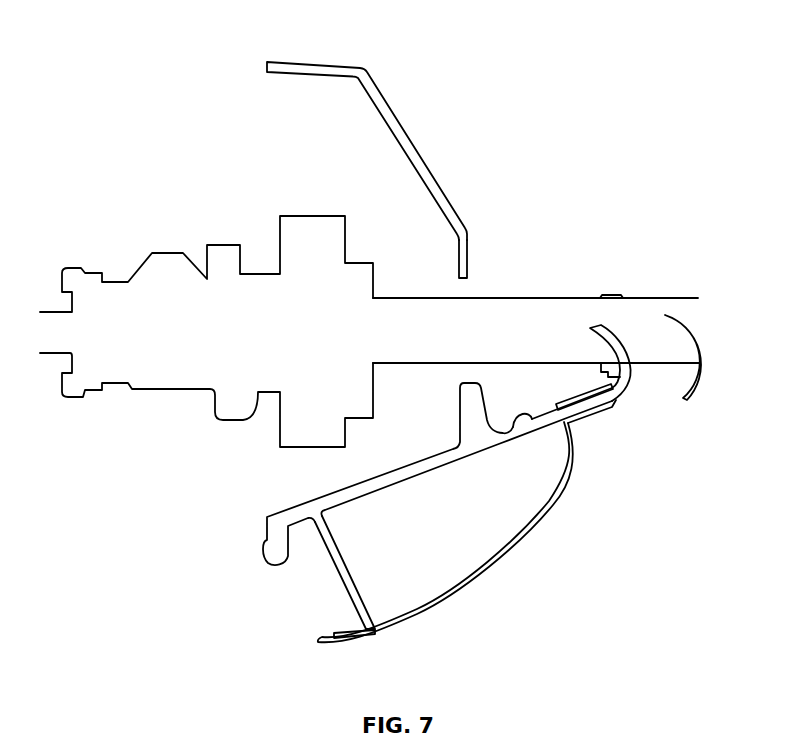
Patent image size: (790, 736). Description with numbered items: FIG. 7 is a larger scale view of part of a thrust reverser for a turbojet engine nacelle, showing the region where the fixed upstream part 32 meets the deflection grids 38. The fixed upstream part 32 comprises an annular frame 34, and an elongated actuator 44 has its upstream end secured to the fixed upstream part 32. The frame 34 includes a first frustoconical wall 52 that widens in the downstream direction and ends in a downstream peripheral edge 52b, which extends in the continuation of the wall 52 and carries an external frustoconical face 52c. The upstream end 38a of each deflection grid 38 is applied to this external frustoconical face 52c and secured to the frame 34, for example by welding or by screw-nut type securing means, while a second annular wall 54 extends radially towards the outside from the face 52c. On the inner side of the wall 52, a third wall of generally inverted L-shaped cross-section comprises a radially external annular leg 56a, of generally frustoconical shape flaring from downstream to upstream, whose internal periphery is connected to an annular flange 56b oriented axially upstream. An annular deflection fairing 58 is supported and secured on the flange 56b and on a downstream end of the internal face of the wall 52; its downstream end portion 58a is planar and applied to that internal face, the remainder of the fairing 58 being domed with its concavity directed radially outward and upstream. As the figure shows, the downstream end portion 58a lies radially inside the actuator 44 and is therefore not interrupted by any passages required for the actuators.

The fixed upstream part 32 is at (221, 125).
The annular frame 34 is at (309, 58).
The deflection grid 38 is at (699, 408).
The upstream end of the grid 38a is at (574, 402).
The actuator 44 is at (128, 252).
The first frustoconical wall 52 is at (372, 486).
The downstream peripheral edge 52b is at (620, 404).
The external frustoconical face 52c is at (516, 426).
The second annular wall 54 is at (462, 257).
The radially external annular leg 56a is at (346, 576).
The annular flange 56b is at (350, 630).
The annular deflection fairing 58 is at (434, 628).
The downstream end portion 58a is at (584, 421).